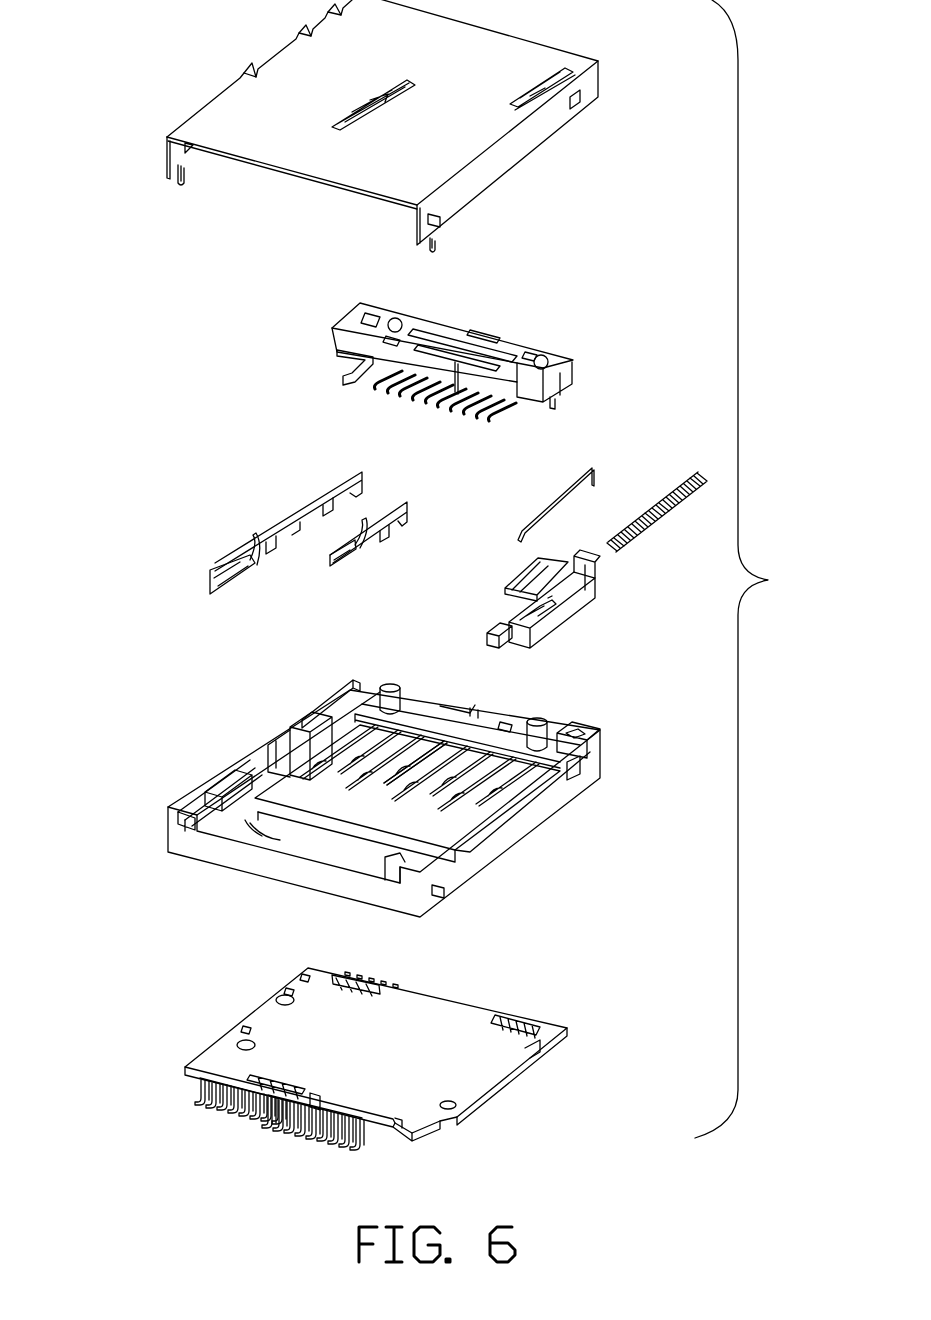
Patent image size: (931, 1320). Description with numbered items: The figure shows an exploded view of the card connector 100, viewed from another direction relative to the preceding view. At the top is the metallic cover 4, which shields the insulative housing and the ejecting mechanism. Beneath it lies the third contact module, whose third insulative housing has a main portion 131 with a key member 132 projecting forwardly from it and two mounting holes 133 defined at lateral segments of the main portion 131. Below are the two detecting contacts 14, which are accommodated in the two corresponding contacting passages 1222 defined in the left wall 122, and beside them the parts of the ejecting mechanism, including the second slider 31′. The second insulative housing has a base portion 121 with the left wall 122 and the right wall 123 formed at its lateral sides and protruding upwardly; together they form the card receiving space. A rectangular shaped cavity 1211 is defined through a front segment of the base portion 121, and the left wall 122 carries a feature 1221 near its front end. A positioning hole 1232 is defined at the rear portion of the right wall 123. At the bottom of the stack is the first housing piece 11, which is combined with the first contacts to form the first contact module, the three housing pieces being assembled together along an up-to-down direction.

The card connector 100 is at (768, 580).
The metallic cover 4 is at (235, 50).
The main portion 131 is at (428, 336).
The key member 132 is at (350, 367).
The mounting holes 133 is at (543, 358).
The detecting contacts 14 is at (357, 455).
The contacting passages 1222 is at (337, 683).
The left wall 122 is at (213, 766).
The latch block 1221 is at (187, 817).
The base portion 121 is at (382, 782).
The rectangular shaped cavity 1211 is at (310, 837).
The right wall 123 is at (586, 812).
The second slider 31′ is at (425, 823).
The positioning hole 1232 is at (593, 722).
The first housing piece 11 is at (480, 1065).